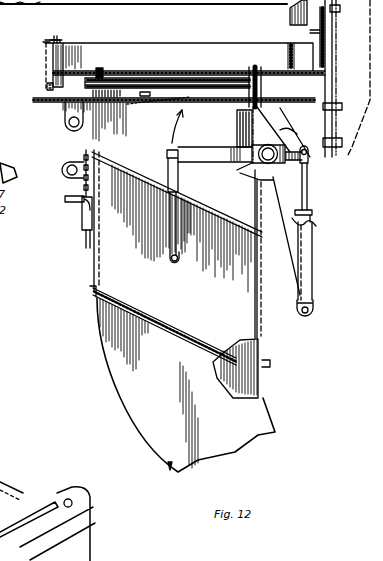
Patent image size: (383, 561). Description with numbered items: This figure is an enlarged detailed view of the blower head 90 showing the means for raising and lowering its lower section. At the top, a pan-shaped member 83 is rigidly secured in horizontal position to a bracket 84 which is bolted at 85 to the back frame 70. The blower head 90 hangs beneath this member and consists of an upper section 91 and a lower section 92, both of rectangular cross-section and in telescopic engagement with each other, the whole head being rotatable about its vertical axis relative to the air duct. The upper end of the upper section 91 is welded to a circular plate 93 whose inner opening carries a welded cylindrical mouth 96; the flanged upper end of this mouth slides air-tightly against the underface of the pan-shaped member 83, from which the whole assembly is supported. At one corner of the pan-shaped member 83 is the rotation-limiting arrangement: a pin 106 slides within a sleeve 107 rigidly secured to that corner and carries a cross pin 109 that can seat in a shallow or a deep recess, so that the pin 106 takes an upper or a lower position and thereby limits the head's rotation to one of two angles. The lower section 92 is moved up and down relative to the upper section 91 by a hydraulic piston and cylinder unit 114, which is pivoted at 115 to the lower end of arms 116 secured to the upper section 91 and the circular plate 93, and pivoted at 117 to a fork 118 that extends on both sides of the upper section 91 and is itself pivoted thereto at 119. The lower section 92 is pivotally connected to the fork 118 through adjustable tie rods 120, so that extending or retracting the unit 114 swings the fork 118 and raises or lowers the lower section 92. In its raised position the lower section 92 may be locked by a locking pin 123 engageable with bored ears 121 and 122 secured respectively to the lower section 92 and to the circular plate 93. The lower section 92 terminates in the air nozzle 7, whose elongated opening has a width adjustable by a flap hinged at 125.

The air nozzle 7 is at (170, 470).
The back frame 70 is at (360, 123).
The pan-shaped member 83 is at (115, 64).
The bracket 84 is at (303, 15).
The bolts 85 is at (336, 105).
The blower head 90 is at (93, 337).
The upper section 91 is at (133, 133).
The lower section 92 is at (117, 313).
The circular plate 93 is at (48, 104).
The cylindrical mouth 96 is at (145, 93).
The pin 106 is at (47, 87).
The sleeve 107 is at (44, 58).
The cross pin 109 is at (58, 36).
The hydraulic piston and cylinder unit 114 is at (313, 215).
The pivot 115 is at (308, 298).
The arms 116 is at (313, 244).
The pivot 117 is at (310, 158).
The fork 118 is at (222, 157).
The pivot 119 is at (262, 167).
The adjustable tie rods 120 is at (167, 188).
The bored ear 121 is at (66, 170).
The bored ear 122 is at (65, 118).
The locking pin 123 is at (88, 248).
The hinge 125 is at (25, 513).